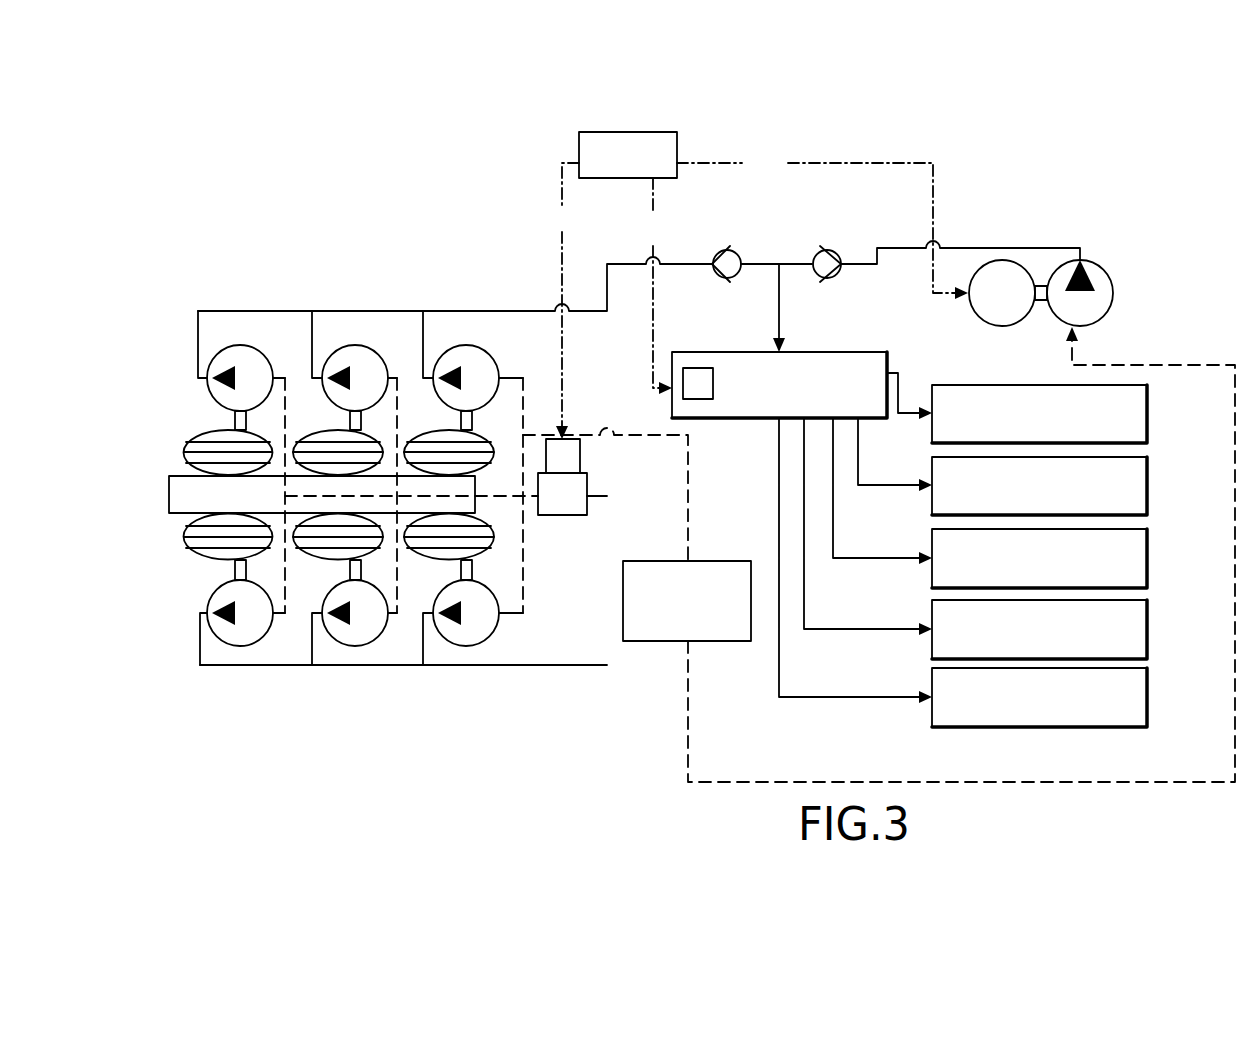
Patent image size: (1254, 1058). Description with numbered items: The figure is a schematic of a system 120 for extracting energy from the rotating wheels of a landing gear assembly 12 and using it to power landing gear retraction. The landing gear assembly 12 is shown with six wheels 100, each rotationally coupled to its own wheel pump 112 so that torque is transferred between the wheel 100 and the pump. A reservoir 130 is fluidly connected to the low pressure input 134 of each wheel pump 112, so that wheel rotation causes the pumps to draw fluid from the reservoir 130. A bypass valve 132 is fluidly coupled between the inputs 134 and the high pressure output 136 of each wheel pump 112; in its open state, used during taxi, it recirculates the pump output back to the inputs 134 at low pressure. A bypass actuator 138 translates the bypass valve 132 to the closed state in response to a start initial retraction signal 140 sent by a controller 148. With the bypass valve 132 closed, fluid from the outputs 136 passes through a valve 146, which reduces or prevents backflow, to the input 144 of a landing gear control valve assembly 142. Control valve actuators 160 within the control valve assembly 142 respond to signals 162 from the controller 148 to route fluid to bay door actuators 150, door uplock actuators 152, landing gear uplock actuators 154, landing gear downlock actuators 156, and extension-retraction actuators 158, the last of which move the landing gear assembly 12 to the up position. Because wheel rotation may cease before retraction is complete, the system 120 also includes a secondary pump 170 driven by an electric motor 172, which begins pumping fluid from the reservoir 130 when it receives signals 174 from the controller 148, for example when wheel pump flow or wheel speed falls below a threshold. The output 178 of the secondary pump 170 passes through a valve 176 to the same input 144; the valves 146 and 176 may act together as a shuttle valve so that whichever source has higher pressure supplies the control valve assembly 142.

The landing gear assembly 12 is at (154, 419).
The wheel 100 is at (190, 448).
The wheel pump 112 is at (238, 350).
The system 120 is at (203, 163).
The reservoir 130 is at (648, 628).
The bypass valve 132 is at (562, 494).
The input 134 is at (275, 377).
The output 136 is at (208, 377).
The bypass actuator 138 is at (563, 456).
The start initial retraction signal 140 is at (563, 301).
The landing gear control valve assembly 142 is at (858, 372).
The input 144 is at (775, 348).
The valve 146 is at (721, 254).
The controller 148 is at (628, 155).
The bay door actuators 150 is at (1137, 415).
The door uplock actuators 152 is at (1137, 487).
The landing gear uplock actuators 154 is at (1137, 559).
The landing gear downlock actuators 156 is at (1137, 630).
The extension-retraction actuators 158 is at (1137, 698).
The control valve actuators 160 is at (698, 383).
The signals 162 is at (654, 286).
The secondary pump 170 is at (1098, 290).
The electric motor 172 is at (1000, 268).
The signals 174 is at (822, 225).
The valve 176 is at (830, 250).
The output 178 is at (1078, 256).